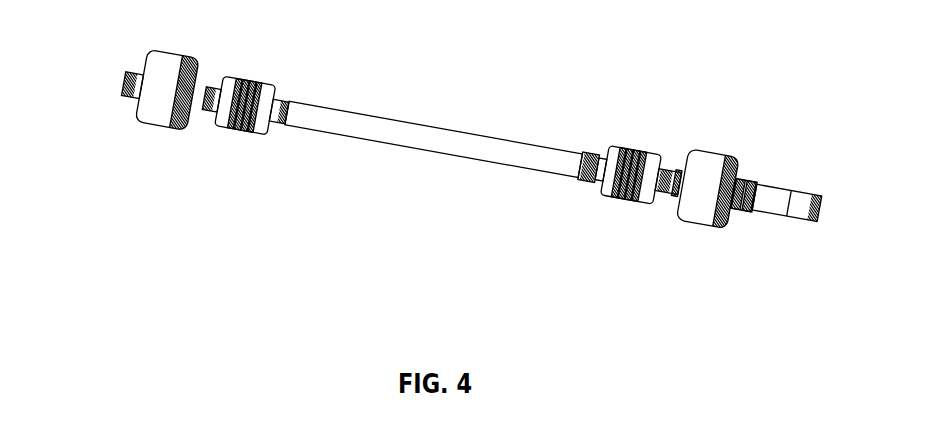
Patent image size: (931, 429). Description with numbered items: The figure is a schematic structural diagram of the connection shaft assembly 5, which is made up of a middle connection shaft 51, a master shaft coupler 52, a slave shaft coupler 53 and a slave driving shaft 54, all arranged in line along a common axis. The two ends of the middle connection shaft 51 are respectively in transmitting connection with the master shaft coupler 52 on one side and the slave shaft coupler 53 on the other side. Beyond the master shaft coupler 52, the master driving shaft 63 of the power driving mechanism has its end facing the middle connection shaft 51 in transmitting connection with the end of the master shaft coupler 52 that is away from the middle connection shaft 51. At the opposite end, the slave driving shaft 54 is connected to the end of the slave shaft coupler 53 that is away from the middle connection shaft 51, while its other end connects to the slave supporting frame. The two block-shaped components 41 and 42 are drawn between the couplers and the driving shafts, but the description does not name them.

The connection shaft assembly 5 is at (543, 295).
The middle connection shaft 51 is at (427, 142).
The master shaft coupler 52 is at (613, 198).
The slave shaft coupler 53 is at (241, 128).
The slave driving shaft 54 is at (132, 83).
The second bearing block 41 is at (705, 178).
The first bearing block 42 is at (167, 70).
The master driving shaft 63 is at (765, 205).